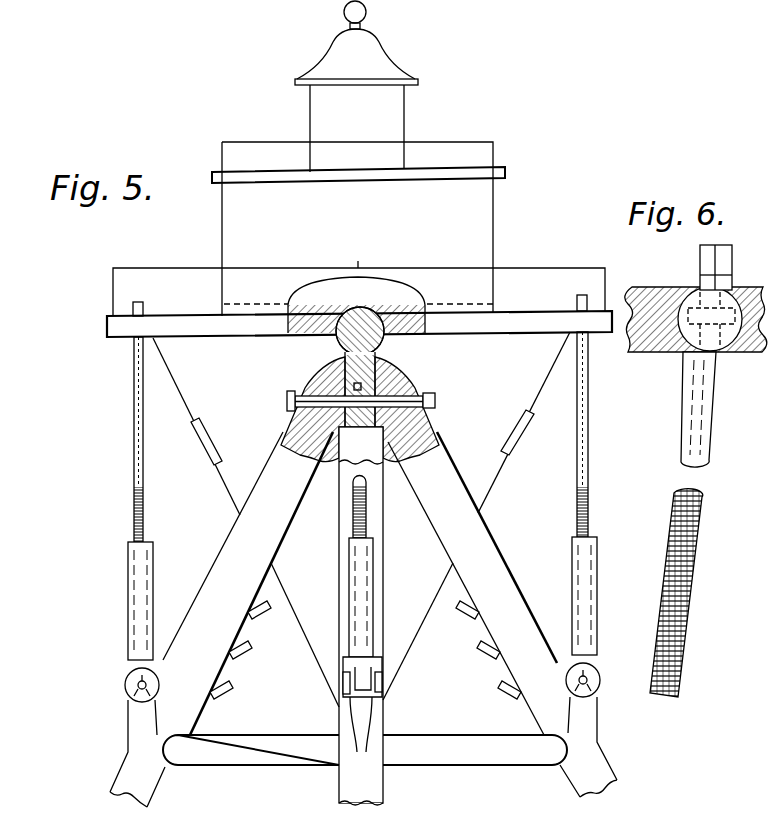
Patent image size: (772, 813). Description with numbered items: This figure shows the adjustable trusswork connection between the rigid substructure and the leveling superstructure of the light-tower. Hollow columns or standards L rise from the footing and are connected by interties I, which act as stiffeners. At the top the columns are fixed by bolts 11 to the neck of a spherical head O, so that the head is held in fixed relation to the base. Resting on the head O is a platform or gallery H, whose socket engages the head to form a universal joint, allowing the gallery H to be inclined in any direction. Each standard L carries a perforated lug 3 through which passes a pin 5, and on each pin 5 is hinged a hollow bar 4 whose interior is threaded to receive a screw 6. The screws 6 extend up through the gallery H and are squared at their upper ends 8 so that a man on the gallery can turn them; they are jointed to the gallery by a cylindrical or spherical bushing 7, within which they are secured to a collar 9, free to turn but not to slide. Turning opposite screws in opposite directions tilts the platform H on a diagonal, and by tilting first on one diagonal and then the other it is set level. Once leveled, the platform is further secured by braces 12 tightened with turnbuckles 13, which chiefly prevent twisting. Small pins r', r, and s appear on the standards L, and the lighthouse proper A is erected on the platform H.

In FIG. 5, the perforated lug 3 is at (138, 713).
In FIG. 5, the hollow bar 4 is at (137, 597).
In FIG. 5, the pin 5 is at (138, 685).
In FIG. 5, the screw 6 is at (134, 447).
In FIG. 6, the screw 6 is at (713, 427).
In FIG. 5, the bushing 7 is at (133, 332).
In FIG. 6, the bushing 7 is at (700, 346).
In FIG. 5, the squared upper end 8 is at (143, 306).
In FIG. 6, the squared upper end 8 is at (700, 258).
In FIG. 6, the collar 9 is at (708, 328).
In FIG. 5, the bolts 11 is at (354, 386).
In FIG. 5, the braces 12 is at (233, 498).
In FIG. 5, the turnbuckles 13 is at (207, 446).
In FIG. 5, the lighthouse proper A is at (358, 229).
In FIG. 5, the platform or gallery H is at (221, 331).
In FIG. 5, the spherical head O is at (369, 341).
In FIG. 5, the hollow column L is at (360, 581).
In FIG. 5, the interties I is at (365, 752).
In FIG. 5, the pin r' is at (363, 605).
In FIG. 5, the pin r is at (364, 645).
In FIG. 5, the pin s is at (500, 684).